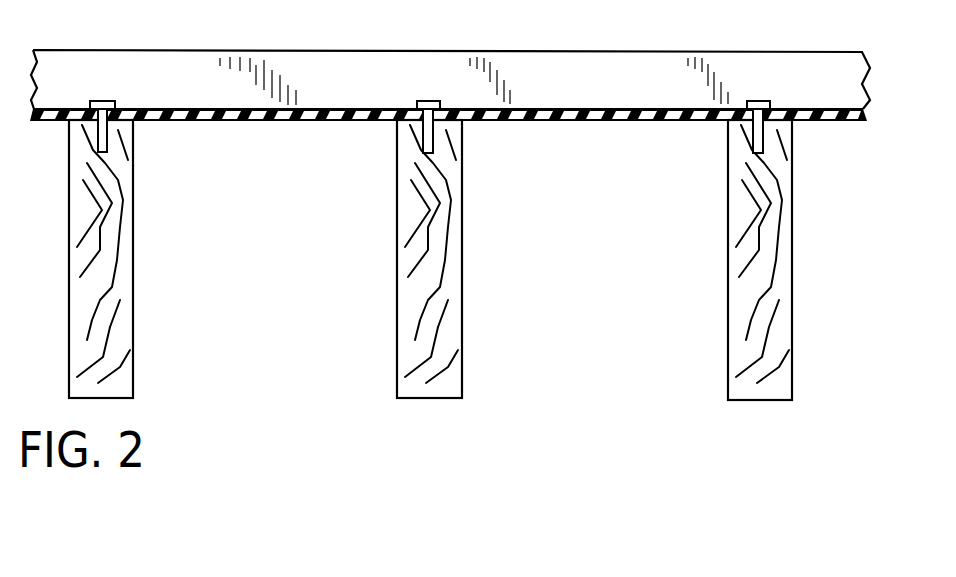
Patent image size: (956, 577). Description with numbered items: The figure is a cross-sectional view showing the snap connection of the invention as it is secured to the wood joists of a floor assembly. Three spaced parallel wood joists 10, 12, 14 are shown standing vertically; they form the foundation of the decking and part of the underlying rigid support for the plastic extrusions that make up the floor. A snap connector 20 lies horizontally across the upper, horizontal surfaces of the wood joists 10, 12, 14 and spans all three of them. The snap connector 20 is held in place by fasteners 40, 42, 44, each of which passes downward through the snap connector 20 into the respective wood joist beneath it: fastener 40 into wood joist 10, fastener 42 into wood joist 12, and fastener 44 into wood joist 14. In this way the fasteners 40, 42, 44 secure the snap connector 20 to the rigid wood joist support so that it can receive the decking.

The wood joist 10 is at (120, 285).
The wood joist 12 is at (445, 285).
The wood joist 14 is at (777, 300).
The snap connector 20 is at (533, 121).
The fastener 40 is at (101, 100).
The fastener 42 is at (427, 100).
The fastener 44 is at (756, 100).